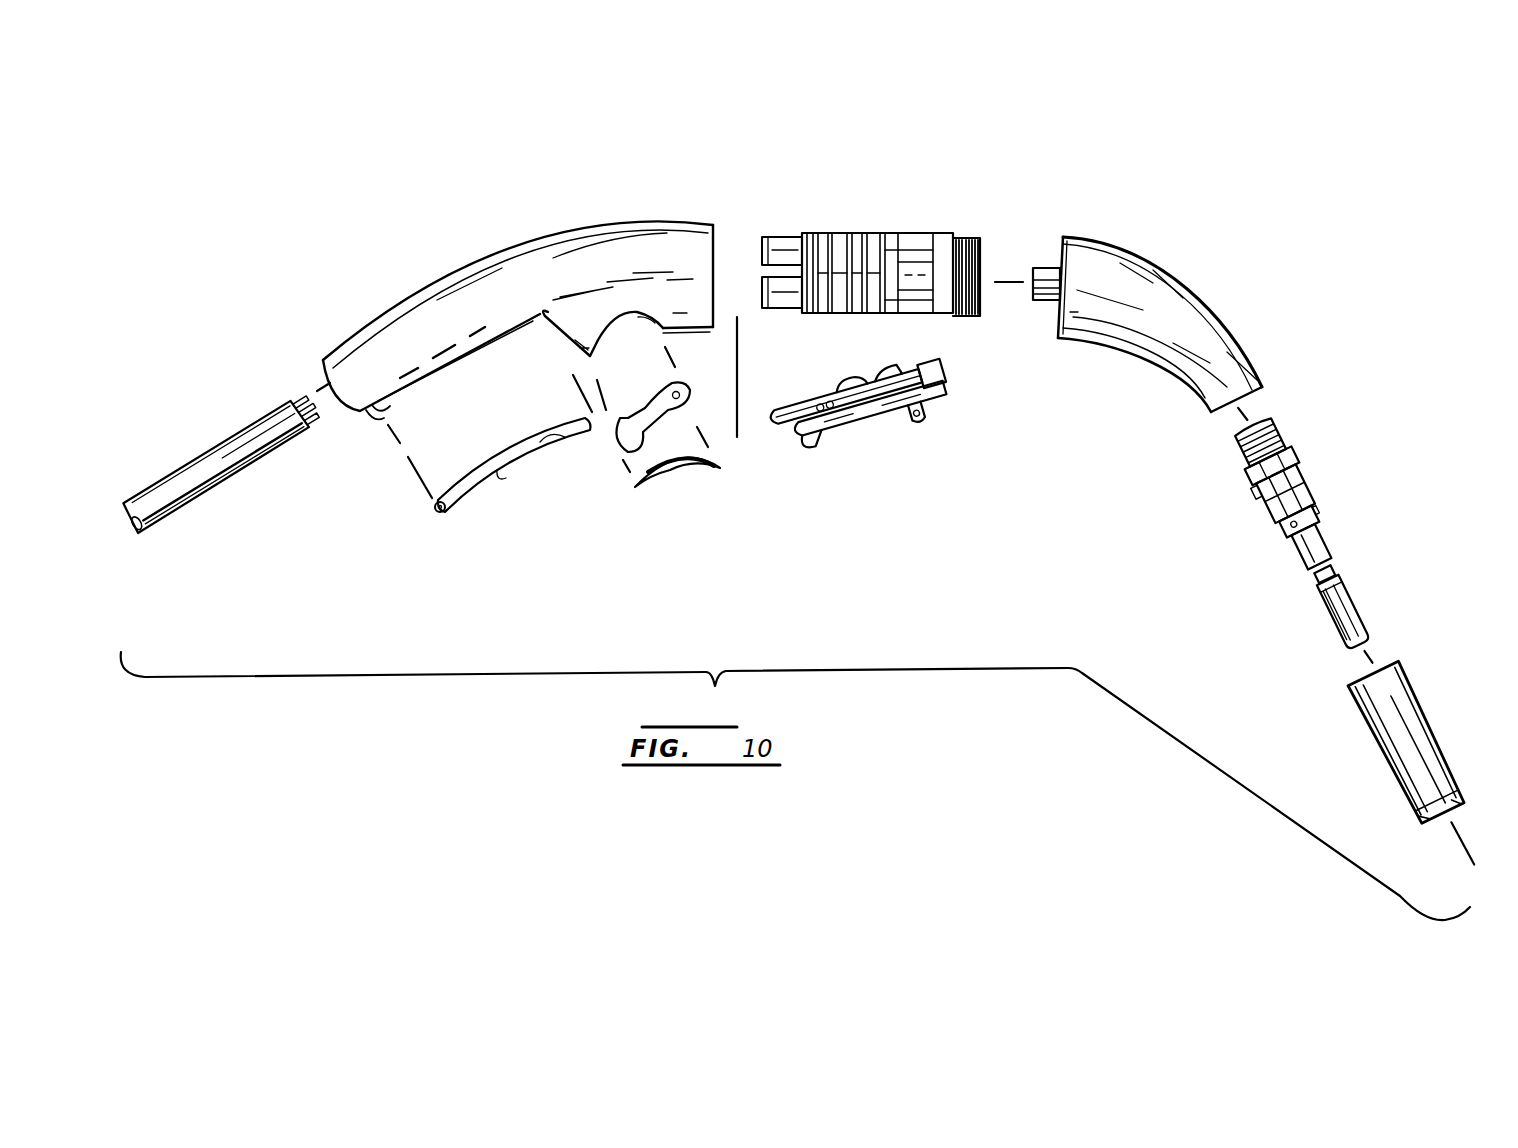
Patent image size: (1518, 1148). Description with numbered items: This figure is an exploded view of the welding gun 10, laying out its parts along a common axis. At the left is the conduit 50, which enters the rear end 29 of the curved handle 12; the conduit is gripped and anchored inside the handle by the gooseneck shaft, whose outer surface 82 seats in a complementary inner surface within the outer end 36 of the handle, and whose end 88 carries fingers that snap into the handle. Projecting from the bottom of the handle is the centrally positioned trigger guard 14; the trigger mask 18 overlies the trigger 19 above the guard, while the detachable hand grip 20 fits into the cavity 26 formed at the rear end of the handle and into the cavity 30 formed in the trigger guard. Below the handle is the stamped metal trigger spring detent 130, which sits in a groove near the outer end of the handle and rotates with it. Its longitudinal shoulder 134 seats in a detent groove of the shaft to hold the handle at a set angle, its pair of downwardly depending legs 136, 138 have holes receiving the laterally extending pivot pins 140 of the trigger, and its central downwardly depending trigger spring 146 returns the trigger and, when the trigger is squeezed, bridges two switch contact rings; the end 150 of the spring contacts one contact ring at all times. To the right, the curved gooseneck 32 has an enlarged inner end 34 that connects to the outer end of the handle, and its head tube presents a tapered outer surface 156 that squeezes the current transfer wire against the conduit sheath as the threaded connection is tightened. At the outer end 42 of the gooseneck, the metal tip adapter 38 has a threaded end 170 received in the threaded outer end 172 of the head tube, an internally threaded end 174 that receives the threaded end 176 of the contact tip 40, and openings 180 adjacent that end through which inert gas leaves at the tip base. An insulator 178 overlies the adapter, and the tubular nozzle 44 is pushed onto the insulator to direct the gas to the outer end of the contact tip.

The welding gun 10 is at (999, 182).
The curved handle 12 is at (530, 260).
The trigger guard 14 is at (580, 355).
The trigger mask 18 is at (688, 473).
The trigger 19 is at (627, 433).
The detachable hand grip 20 is at (503, 458).
The cavity 26 is at (384, 409).
The rear end of handle 29 is at (378, 414).
The cavity 30 is at (545, 316).
The curved gooseneck 32 is at (1182, 295).
The enlarged inner end 34 is at (1062, 248).
The outer end of handle 36 is at (720, 235).
The tip adapter 38 is at (1283, 444).
The contact tip 40 is at (761, 257).
The outer end of gooseneck 42 is at (1254, 389).
The nozzle 44 is at (1432, 716).
The conduit 50 is at (250, 445).
The outer surface of gooseneck shaft 82 is at (838, 242).
The end of gooseneck shaft 88 is at (760, 240).
The trigger spring detent 130 is at (892, 413).
The longitudinal shoulder 134 is at (900, 398).
The downwardly depending leg 136 is at (907, 440).
The downwardly depending leg 138 is at (884, 388).
The pivot pins 140 is at (911, 425).
The trigger spring 146 is at (849, 402).
The end of trigger spring 150 is at (818, 447).
The tapered outer surface 156 is at (1053, 292).
The threaded end 170 is at (1238, 451).
The threaded outer end 172 is at (1212, 421).
The internally threaded end 174 is at (1323, 537).
The threaded end 176 is at (1307, 580).
The insulator 178 is at (1243, 472).
The openings 180 is at (1313, 507).